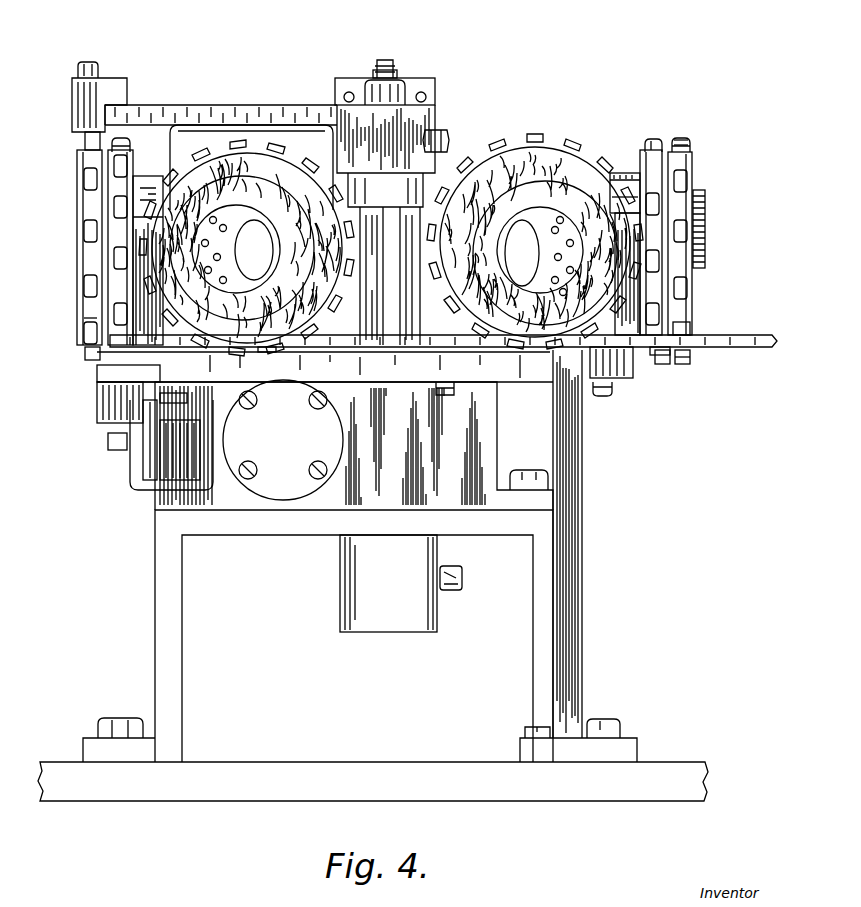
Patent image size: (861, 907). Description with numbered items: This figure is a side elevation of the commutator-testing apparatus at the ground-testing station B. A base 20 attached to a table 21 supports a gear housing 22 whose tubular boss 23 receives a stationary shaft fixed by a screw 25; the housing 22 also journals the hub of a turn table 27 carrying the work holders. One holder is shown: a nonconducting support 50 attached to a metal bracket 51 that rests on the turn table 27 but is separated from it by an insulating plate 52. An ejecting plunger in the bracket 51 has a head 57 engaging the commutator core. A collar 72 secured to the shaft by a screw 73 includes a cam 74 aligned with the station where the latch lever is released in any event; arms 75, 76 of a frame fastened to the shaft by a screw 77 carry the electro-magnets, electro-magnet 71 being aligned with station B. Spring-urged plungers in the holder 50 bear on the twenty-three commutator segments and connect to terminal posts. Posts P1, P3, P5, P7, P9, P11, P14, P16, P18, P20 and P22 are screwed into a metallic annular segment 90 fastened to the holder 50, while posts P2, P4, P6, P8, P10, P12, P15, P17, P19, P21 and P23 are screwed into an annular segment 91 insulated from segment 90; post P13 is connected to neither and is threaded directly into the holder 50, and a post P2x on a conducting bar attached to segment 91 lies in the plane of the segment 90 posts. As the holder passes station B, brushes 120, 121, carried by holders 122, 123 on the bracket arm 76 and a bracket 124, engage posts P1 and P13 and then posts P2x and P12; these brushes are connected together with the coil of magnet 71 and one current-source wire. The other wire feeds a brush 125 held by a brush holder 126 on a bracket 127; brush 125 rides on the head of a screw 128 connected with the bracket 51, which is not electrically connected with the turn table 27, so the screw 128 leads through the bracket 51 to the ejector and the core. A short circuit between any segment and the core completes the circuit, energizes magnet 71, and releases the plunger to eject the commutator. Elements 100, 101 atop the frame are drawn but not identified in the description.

The base 20 is at (160, 665).
The table 21 is at (232, 778).
The gear housing 22 is at (305, 500).
The tubular boss 23 is at (345, 604).
The screw 25 is at (463, 584).
The turn table 27 is at (628, 376).
The nonconducting support 50 is at (622, 172).
The metal bracket 51 is at (417, 348).
The insulating plate 52 is at (635, 358).
The head 57 is at (541, 232).
The electro-magnet 71 is at (163, 152).
The collar 72 is at (440, 186).
The screw 73 is at (320, 178).
The cam 74 is at (390, 276).
The arm 75 is at (425, 78).
The arm 76 is at (128, 88).
The screw 77 is at (445, 137).
The metallic annular segment 90 is at (690, 162).
The metallic annular segment 91 is at (657, 227).
The bolt 100 is at (388, 58).
The nut 101 is at (378, 66).
The brush 120 is at (86, 140).
The brush 121 is at (110, 368).
The brush holder 122 is at (80, 95).
The brush holder 123 is at (163, 400).
The bracket 124 is at (137, 470).
The brush 125 is at (162, 402).
The brush holder 126 is at (158, 440).
The bracket 127 is at (152, 486).
The screw 128 is at (108, 441).
The station B is at (76, 247).
The terminal post P1 is at (690, 150).
The terminal post P2 is at (654, 148).
The terminal post P2x is at (678, 145).
The terminal post P3 is at (562, 142).
The terminal post P4 is at (120, 164).
The terminal post P5 is at (114, 206).
The terminal post P6 is at (88, 228).
The terminal post P7 is at (114, 259).
The terminal post P8 is at (87, 288).
The terminal post P9 is at (114, 309).
The terminal post P10 is at (88, 330).
The terminal post P11 is at (83, 344).
The terminal post P12 is at (142, 346).
The terminal post P13 is at (662, 360).
The terminal post P14 is at (86, 355).
The terminal post P15 is at (670, 358).
The terminal post P16 is at (690, 330).
The terminal post P17 is at (660, 313).
The terminal post P18 is at (684, 291).
The terminal post P19 is at (660, 266).
The terminal post P20 is at (688, 228).
The terminal post P21 is at (663, 254).
The terminal post P22 is at (682, 178).
The terminal post P23 is at (625, 190).